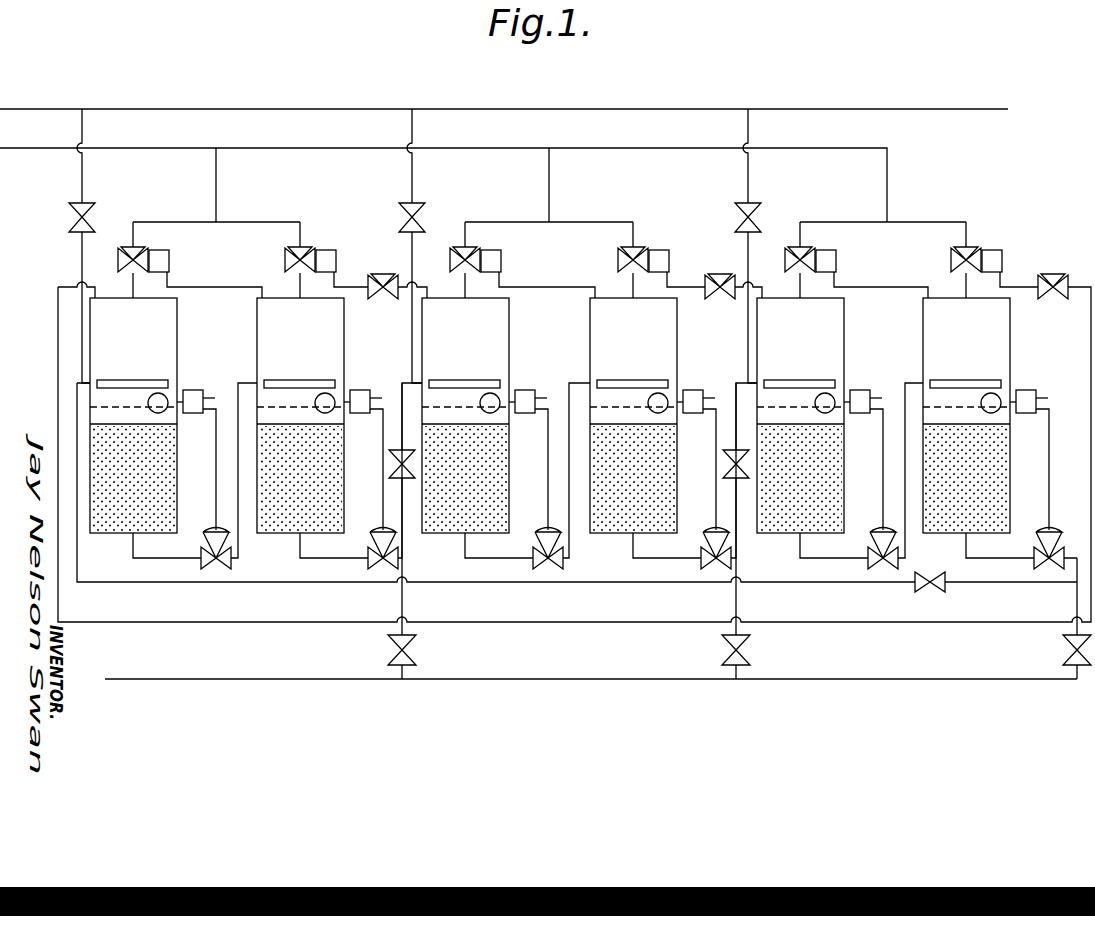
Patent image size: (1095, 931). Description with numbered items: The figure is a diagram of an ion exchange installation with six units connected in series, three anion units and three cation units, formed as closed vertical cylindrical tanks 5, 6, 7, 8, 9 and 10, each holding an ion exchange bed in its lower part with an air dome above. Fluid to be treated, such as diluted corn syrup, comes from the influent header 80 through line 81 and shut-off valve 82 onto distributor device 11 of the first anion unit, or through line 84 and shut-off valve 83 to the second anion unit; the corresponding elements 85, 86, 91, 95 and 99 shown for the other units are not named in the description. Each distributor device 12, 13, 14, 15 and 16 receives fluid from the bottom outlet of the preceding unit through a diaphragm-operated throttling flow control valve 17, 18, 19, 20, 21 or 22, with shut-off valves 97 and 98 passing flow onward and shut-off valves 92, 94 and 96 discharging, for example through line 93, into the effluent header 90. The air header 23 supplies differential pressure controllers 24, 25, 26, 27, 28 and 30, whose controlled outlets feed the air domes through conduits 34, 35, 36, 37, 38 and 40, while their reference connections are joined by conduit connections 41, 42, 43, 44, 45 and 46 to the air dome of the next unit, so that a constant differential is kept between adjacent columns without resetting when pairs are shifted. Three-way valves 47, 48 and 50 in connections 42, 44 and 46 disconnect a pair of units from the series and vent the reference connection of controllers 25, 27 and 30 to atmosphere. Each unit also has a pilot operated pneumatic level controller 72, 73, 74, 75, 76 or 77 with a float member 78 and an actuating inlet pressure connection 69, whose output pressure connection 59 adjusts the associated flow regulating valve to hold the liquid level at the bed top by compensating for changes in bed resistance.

The closed vertical cylindrical tank 5 is at (178, 336).
The closed vertical cylindrical tank 6 is at (345, 336).
The closed vertical cylindrical tank 7 is at (510, 336).
The closed vertical cylindrical tank 8 is at (678, 336).
The closed vertical cylindrical tank 9 is at (845, 336).
The closed vertical cylindrical tank 10 is at (1011, 336).
The distributor device 11 is at (128, 380).
The distributor device 12 is at (295, 380).
The distributor device 13 is at (460, 380).
The distributor device 14 is at (628, 380).
The distributor device 15 is at (795, 380).
The distributor device 16 is at (961, 380).
The diaphragm-operated throttling flow control valve 17 is at (207, 531).
The diaphragm-operated throttling flow control valve 18 is at (374, 531).
The diaphragm-operated throttling flow control valve 19 is at (539, 531).
The diaphragm-operated throttling flow control valve 20 is at (707, 531).
The diaphragm-operated throttling flow control valve 21 is at (874, 531).
The diaphragm-operated throttling flow control valve 22 is at (1040, 531).
The air pressure header 23 is at (477, 147).
The differential pressure controller 24 is at (169, 256).
The differential pressure controller 25 is at (336, 256).
The differential pressure controller 26 is at (501, 256).
The differential pressure controller 27 is at (669, 257).
The differential pressure controller 28 is at (836, 256).
The differential pressure controller 30 is at (1002, 257).
The conduit 34 is at (133, 288).
The conduit 35 is at (300, 288).
The conduit 36 is at (465, 288).
The conduit 37 is at (633, 288).
The conduit 38 is at (800, 288).
The conduit 40 is at (966, 288).
The reference pressure conduit 41 is at (232, 288).
The reference pressure conduit connection 42 is at (373, 299).
The reference pressure conduit connection 43 is at (556, 288).
The reference pressure conduit connection 44 is at (710, 299).
The reference pressure conduit connection 45 is at (896, 288).
The reference pressure conduit connection 46 is at (1043, 299).
The three-way valve 47 is at (384, 279).
The three-way valve 48 is at (720, 278).
The three-way valve 50 is at (1053, 278).
The output pressure connection 59 is at (216, 468).
The supply or actuating inlet pressure connection 69 is at (214, 397).
The pilot operated pneumatic level controller 72 is at (190, 390).
The pilot operated pneumatic level controller 73 is at (357, 390).
The pilot operated pneumatic level controller 74 is at (522, 390).
The pilot operated pneumatic level controller 75 is at (690, 390).
The pilot operated pneumatic level controller 76 is at (857, 390).
The pilot operated pneumatic level controller 77 is at (1023, 390).
The float member 78 is at (148, 403).
The influent header 80 is at (524, 101).
The line 81 is at (82, 167).
The shut-off valve 82 is at (88, 215).
The shut-off valve 83 is at (418, 215).
The line 84 is at (412, 167).
The influent valve 85 is at (754, 215).
The influent branch pipe 86 is at (748, 167).
The effluent header 90 is at (592, 680).
The effluent drain pipe 91 is at (402, 596).
The shut-off valve 92 is at (405, 656).
The line 93 is at (736, 596).
The shut-off valve 94 is at (739, 656).
The effluent drain pipe 95 is at (1077, 597).
The shut-off valve 96 is at (1063, 650).
The shut-off valve 97 is at (398, 470).
The shut-off valve 98 is at (732, 470).
The return line valve 99 is at (930, 592).